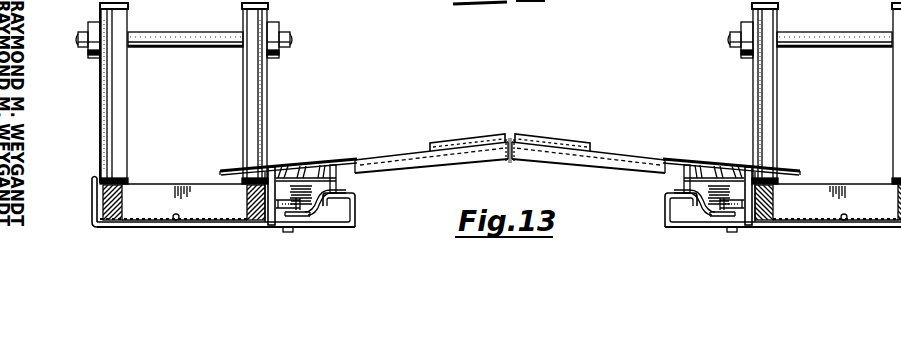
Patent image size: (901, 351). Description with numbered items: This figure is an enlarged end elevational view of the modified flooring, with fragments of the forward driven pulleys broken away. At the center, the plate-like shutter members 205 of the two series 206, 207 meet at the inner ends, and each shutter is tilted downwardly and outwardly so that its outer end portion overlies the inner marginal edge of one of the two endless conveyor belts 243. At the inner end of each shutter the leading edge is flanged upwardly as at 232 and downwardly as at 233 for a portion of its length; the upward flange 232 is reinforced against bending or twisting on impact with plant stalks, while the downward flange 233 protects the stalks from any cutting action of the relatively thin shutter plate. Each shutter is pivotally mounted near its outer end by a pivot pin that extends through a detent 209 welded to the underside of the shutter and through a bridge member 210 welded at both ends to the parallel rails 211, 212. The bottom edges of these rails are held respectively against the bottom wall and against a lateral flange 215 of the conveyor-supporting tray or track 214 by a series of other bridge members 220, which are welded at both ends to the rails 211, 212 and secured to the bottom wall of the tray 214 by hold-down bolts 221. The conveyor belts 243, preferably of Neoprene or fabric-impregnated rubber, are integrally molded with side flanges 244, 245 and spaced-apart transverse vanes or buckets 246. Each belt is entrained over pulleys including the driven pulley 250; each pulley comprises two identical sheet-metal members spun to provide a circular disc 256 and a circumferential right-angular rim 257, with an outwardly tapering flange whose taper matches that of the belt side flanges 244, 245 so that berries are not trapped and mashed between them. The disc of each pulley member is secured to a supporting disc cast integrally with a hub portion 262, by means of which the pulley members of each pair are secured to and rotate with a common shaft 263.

The plate-like shutter member 205 is at (353, 161).
The first series of shutter members 206 is at (406, 156).
The second series of shutter members 207 is at (611, 155).
The detent 209 is at (312, 167).
The bridge member 210 is at (339, 171).
The rail 211 is at (280, 166).
The rail 212 is at (686, 173).
The conveyor-supporting tray 214 is at (233, 228).
The lateral flange 215 is at (347, 197).
The bridge member 220 is at (352, 206).
The hold-down bolt 221 is at (283, 231).
The upwardly turned flange 232 is at (470, 146).
The downwardly turned flange 233 is at (473, 166).
The endless conveyor belt 243 is at (176, 223).
The side flange of conveyor belt 244 is at (98, 218).
The side flange of conveyor belt 245 is at (247, 198).
The transverse vane 246 is at (160, 184).
The driven pulley 250 is at (268, 106).
The circular disc 256 is at (103, 103).
The circumferential right-angular rim 257 is at (119, 103).
The hub portion 262 is at (272, 27).
The common shaft 263 is at (172, 33).